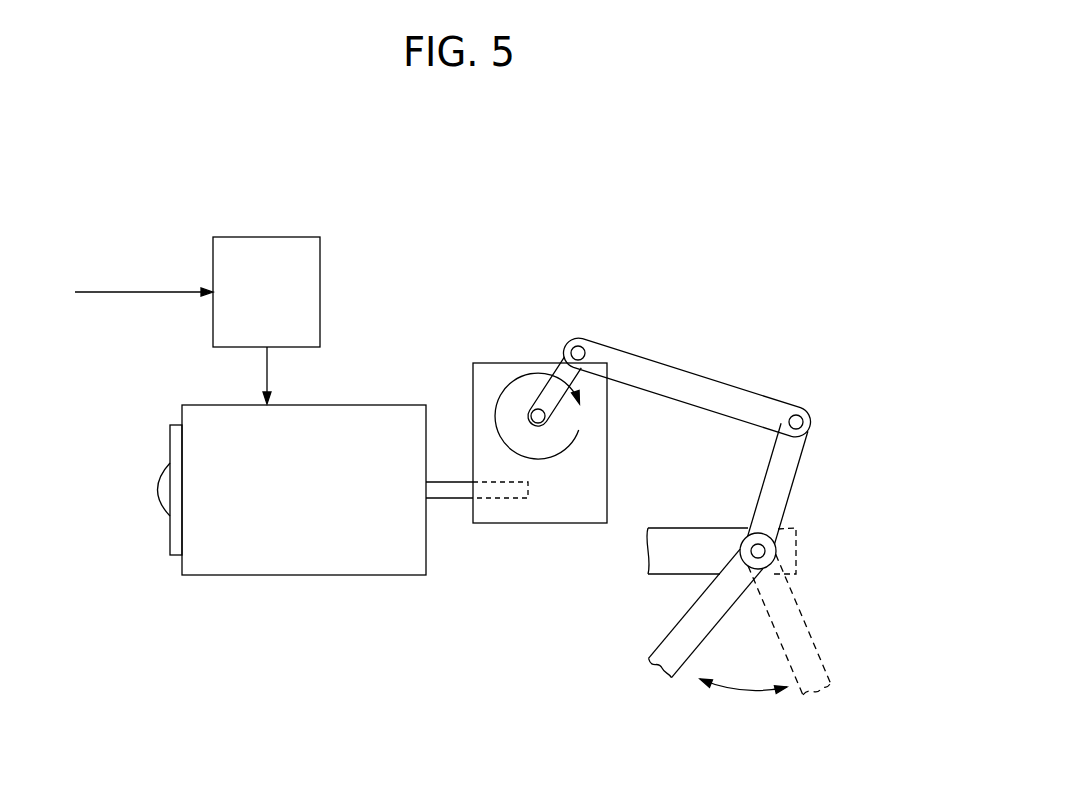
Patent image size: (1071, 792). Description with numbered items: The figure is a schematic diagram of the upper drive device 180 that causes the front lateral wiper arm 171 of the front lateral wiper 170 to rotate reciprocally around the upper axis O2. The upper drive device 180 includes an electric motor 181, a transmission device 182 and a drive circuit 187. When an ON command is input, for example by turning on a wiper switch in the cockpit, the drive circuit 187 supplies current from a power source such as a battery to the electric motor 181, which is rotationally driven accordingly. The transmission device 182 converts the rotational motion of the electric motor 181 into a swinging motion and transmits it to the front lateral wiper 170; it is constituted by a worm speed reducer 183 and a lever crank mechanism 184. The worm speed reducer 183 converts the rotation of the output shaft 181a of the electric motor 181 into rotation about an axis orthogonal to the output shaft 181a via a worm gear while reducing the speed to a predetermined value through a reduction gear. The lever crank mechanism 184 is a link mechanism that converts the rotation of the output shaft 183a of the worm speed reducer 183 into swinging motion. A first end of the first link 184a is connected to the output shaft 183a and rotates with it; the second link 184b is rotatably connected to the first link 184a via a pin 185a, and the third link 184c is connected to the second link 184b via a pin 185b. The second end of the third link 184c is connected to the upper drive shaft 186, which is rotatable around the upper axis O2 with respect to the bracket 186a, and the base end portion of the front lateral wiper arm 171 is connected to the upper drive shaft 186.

The upper drive device 180 is at (424, 200).
The drive circuit 187 is at (272, 237).
The electric motor 181 is at (233, 577).
The output shaft 181a is at (448, 496).
The worm speed reducer 183 is at (485, 372).
The output shaft 183a is at (530, 413).
The transmission device 182 is at (640, 330).
The lever crank mechanism 184 is at (743, 380).
The first link 184a is at (562, 367).
The second link 184b is at (680, 378).
The third link 184c is at (783, 482).
The pin 185a is at (579, 341).
The pin 185b is at (803, 422).
The upper drive shaft 186 is at (766, 548).
The bracket 186a is at (672, 530).
The upper axis O2 is at (776, 574).
The front lateral wiper 170 is at (648, 641).
The front lateral wiper arm 171 is at (673, 613).